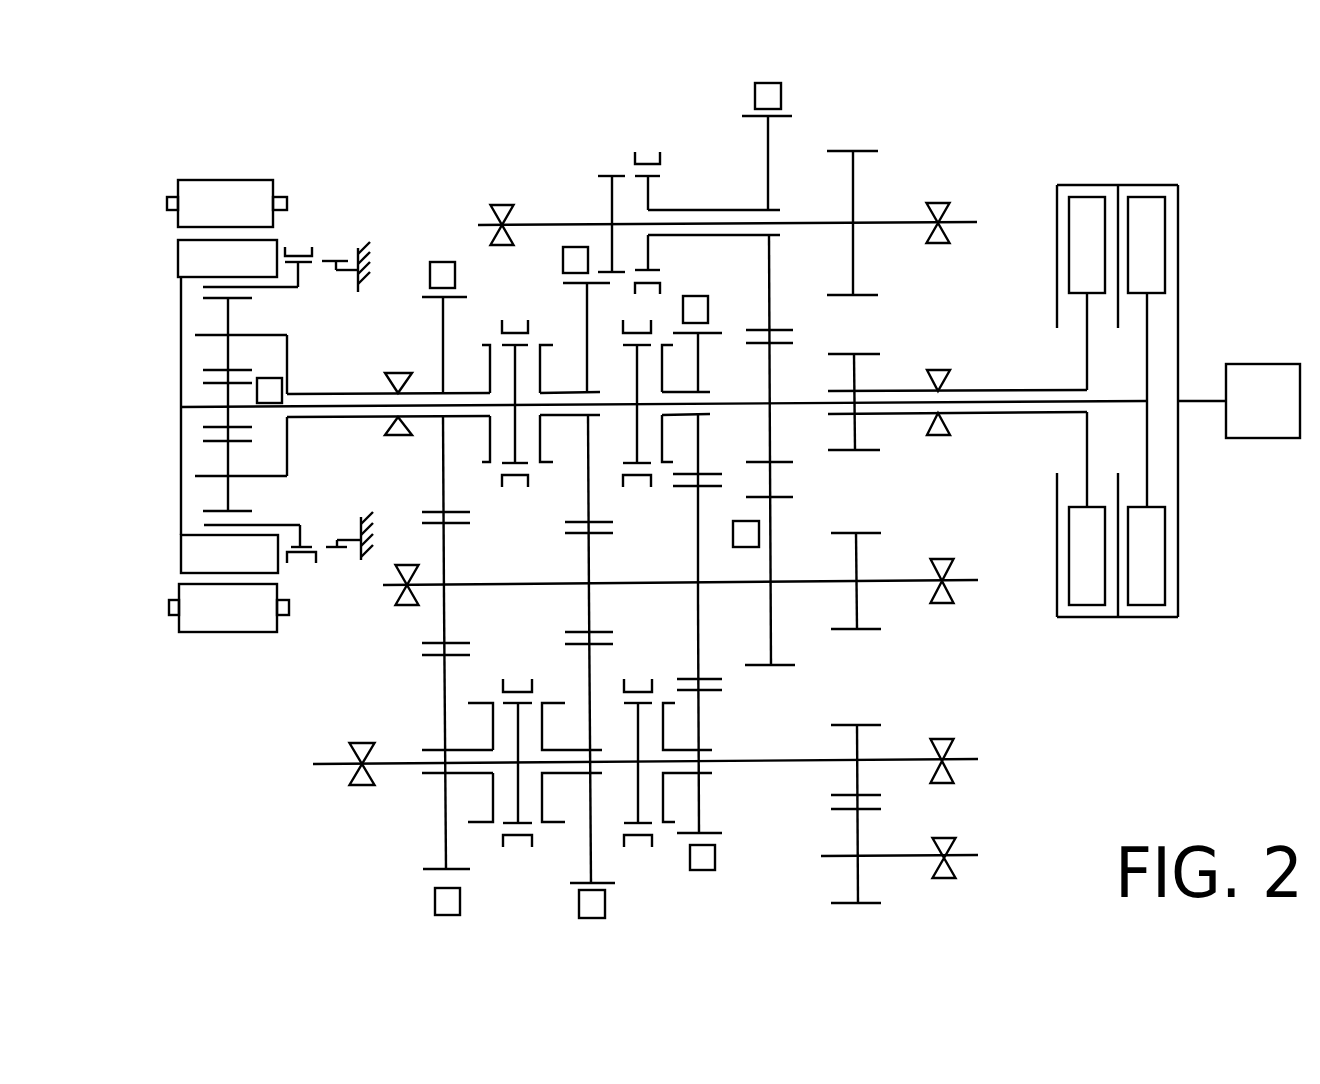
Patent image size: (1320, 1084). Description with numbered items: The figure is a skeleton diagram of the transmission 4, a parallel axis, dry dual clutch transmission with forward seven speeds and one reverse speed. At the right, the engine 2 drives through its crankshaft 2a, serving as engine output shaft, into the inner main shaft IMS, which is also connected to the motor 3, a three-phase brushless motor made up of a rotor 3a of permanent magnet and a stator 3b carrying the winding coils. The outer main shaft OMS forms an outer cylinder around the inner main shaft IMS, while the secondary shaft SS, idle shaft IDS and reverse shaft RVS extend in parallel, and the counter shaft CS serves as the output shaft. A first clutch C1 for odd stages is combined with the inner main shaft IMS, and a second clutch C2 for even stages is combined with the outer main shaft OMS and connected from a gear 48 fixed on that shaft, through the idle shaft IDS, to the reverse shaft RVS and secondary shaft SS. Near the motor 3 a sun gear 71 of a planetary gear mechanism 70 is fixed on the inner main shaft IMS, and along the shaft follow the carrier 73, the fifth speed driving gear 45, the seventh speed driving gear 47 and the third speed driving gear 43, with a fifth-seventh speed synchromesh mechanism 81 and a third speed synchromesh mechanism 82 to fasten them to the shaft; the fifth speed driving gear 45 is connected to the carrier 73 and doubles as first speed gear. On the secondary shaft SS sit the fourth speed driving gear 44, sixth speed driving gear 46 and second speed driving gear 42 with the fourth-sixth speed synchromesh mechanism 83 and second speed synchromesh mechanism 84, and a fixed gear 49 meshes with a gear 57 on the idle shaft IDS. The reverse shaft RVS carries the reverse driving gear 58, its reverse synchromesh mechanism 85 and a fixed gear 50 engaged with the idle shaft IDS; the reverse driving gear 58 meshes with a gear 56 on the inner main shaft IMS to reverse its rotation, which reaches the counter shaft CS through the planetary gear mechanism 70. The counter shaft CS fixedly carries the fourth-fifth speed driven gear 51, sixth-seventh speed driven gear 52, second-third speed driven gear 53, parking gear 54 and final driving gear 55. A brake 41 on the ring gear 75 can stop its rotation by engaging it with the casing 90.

The engine 2 is at (1257, 362).
The crankshaft 2a is at (1196, 400).
The motor 3 is at (198, 363).
The rotor 3a is at (192, 258).
The stator 3b is at (190, 195).
The transmission 4 is at (959, 150).
The brake 41 is at (323, 243).
The second speed driving gear 42 is at (718, 833).
The third speed driving gear 43 is at (712, 332).
The fourth speed driving gear 44 is at (463, 872).
The fifth speed driving gear 45 is at (453, 300).
The sixth speed driving gear 46 is at (605, 882).
The seventh speed driving gear 47 is at (583, 287).
The gear 48 is at (865, 452).
The gear 49 is at (867, 725).
The gear 50 is at (860, 150).
The fourth-fifth speed driven gear 51 is at (459, 527).
The sixth-seventh speed driven gear 52 is at (610, 537).
The second-third speed driven gear 53 is at (685, 488).
The parking gear 54 is at (778, 500).
The final driving gear 55 is at (876, 535).
The gear 56 is at (777, 345).
The gear 57 is at (869, 814).
The reverse driving gear 58 is at (782, 120).
The planetary gear mechanism 70 is at (293, 437).
The sun gear 71 is at (210, 380).
The carrier 73 is at (267, 333).
The ring gear 75 is at (288, 288).
The fifth-seventh speed synchromesh mechanism 81 is at (507, 318).
The third speed synchromesh mechanism 82 is at (658, 320).
The fourth-sixth speed synchromesh mechanism 83 is at (512, 678).
The second speed synchromesh mechanism 84 is at (635, 678).
The reverse synchromesh mechanism 85 is at (647, 153).
The casing 90 is at (368, 255).
The first clutch C1 is at (1138, 180).
The second clutch C2 is at (1084, 180).
The inner main shaft IMS is at (817, 405).
The outer main shaft OMS is at (967, 388).
The reverse shaft RVS is at (960, 216).
The counter shaft CS is at (966, 569).
The secondary shaft SS is at (966, 750).
The idle shaft IDS is at (966, 848).